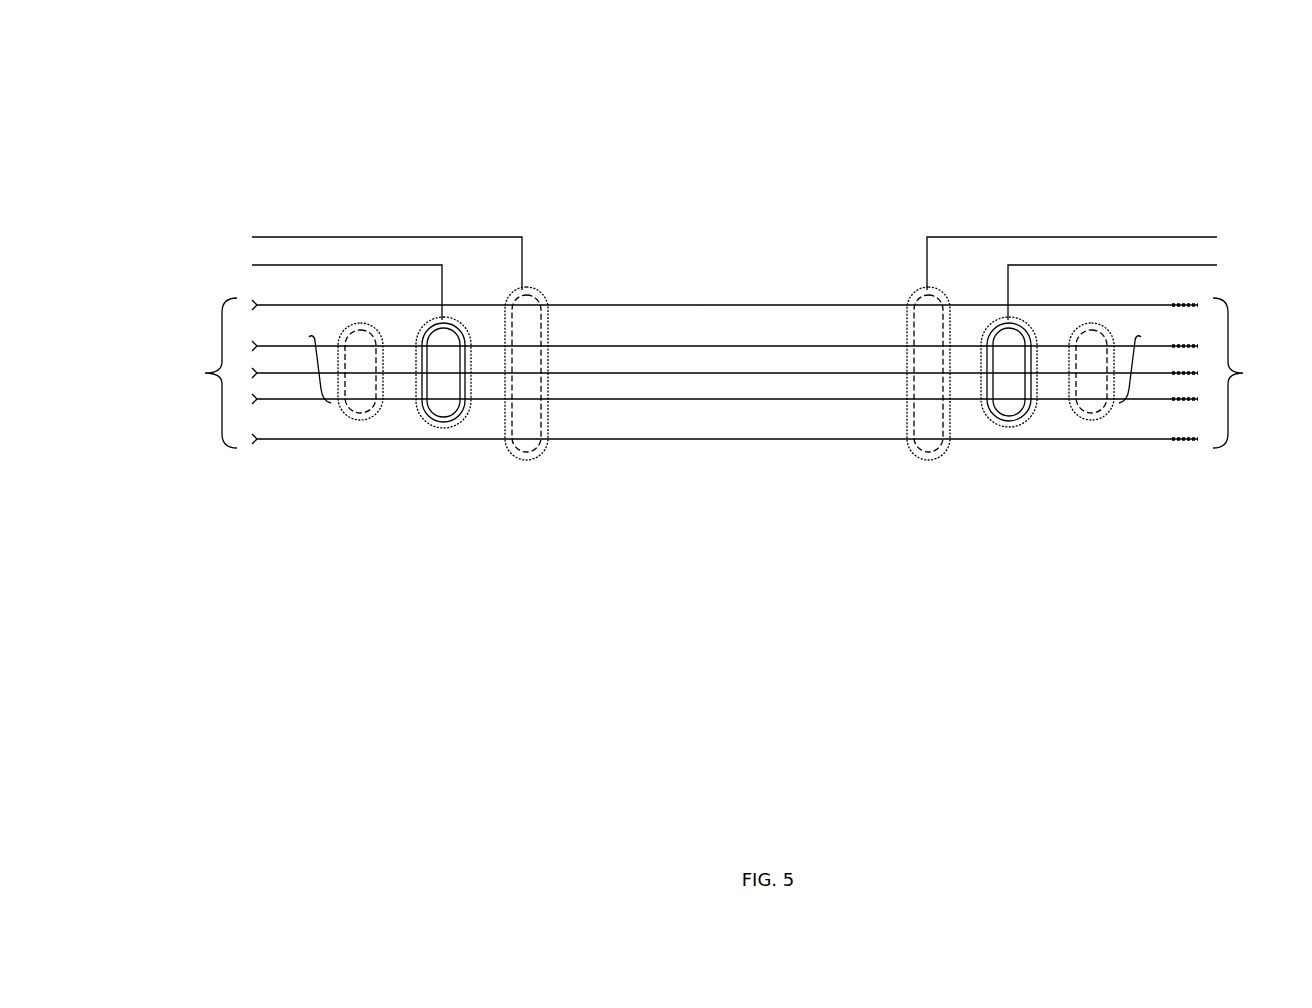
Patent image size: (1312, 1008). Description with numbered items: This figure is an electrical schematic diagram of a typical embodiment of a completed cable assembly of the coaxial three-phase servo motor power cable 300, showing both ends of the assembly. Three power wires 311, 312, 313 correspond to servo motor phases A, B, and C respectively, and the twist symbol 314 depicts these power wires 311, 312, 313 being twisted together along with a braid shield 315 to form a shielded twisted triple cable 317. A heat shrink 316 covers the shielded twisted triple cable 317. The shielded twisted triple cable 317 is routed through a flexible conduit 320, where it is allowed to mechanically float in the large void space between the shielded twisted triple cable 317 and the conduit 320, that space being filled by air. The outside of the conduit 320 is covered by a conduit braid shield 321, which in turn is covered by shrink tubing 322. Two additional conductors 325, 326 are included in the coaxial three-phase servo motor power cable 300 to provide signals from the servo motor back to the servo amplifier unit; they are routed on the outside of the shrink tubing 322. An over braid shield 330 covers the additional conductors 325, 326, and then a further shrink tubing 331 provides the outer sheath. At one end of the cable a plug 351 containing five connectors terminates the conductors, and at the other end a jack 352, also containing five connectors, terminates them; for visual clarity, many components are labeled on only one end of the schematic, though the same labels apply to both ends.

The coaxial three-phase servo motor power cable 300 is at (874, 203).
The power wire 311 is at (587, 397).
The power wire 312 is at (632, 372).
The power wire 313 is at (677, 338).
The twist symbol 314 is at (528, 300).
The braid shield 315 is at (347, 418).
The heat shrink 316 is at (362, 418).
The shielded twisted triple cable 317 is at (1149, 323).
The conduit 320 is at (450, 325).
The conduit braid shield 321 is at (362, 265).
The shrink tubing 322 is at (447, 427).
The additional conductor 325 is at (759, 305).
The additional conductor 326 is at (763, 440).
The over braid shield 330 is at (293, 238).
The shrink tubing 331 is at (525, 460).
The plug 351 is at (193, 373).
The jack 352 is at (1254, 373).